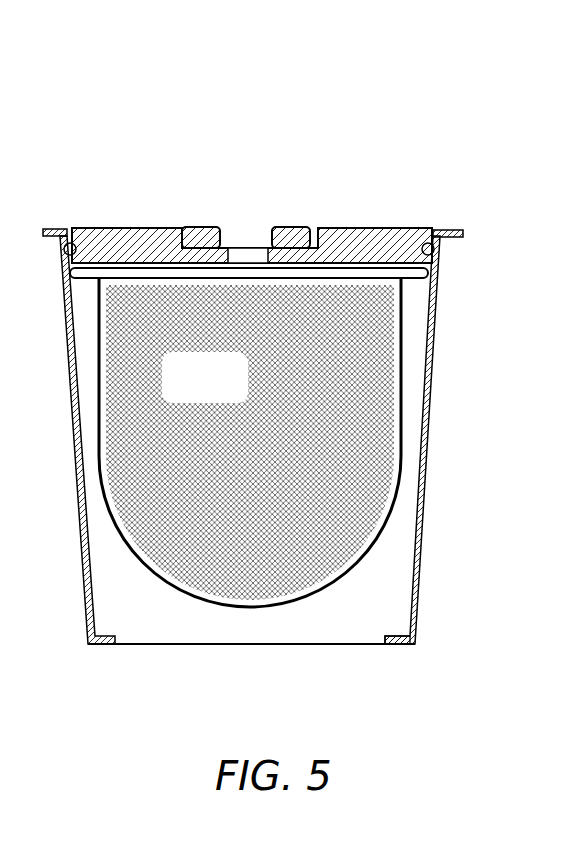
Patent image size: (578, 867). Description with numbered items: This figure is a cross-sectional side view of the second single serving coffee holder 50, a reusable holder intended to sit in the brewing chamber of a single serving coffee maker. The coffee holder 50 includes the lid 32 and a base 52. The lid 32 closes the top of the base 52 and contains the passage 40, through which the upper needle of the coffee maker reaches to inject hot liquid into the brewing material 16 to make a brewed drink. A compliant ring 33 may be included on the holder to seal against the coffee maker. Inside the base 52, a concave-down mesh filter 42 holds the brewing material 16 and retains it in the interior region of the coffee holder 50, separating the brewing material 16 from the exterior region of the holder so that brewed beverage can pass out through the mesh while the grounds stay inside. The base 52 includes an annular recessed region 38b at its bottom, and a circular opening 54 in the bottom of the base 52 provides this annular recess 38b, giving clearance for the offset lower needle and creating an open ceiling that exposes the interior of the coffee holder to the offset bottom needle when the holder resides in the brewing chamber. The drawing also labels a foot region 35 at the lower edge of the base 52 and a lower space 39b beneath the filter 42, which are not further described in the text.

The second coffee holder 50 is at (279, 373).
The lid 32 is at (286, 192).
The compliant ring 33 is at (190, 232).
The passage 40 is at (253, 260).
The base 52 is at (423, 440).
The foot 35 is at (383, 643).
The circular opening 54 is at (257, 645).
The mesh filter 42 is at (323, 590).
The brewing material 16 is at (187, 384).
The annular recessed region 38b is at (156, 632).
The lower chamber 39b is at (195, 630).